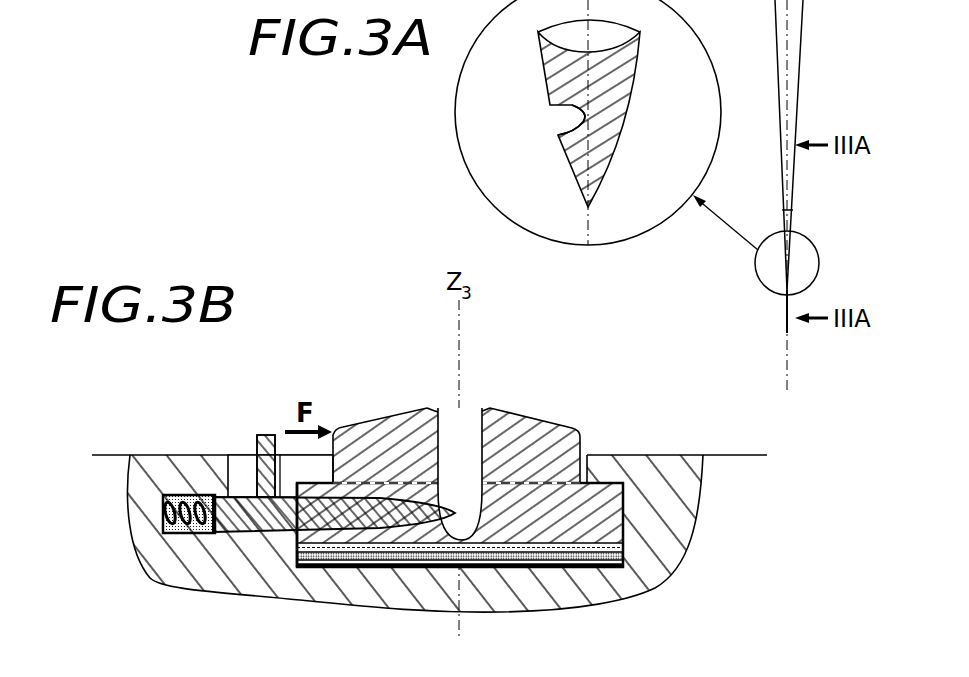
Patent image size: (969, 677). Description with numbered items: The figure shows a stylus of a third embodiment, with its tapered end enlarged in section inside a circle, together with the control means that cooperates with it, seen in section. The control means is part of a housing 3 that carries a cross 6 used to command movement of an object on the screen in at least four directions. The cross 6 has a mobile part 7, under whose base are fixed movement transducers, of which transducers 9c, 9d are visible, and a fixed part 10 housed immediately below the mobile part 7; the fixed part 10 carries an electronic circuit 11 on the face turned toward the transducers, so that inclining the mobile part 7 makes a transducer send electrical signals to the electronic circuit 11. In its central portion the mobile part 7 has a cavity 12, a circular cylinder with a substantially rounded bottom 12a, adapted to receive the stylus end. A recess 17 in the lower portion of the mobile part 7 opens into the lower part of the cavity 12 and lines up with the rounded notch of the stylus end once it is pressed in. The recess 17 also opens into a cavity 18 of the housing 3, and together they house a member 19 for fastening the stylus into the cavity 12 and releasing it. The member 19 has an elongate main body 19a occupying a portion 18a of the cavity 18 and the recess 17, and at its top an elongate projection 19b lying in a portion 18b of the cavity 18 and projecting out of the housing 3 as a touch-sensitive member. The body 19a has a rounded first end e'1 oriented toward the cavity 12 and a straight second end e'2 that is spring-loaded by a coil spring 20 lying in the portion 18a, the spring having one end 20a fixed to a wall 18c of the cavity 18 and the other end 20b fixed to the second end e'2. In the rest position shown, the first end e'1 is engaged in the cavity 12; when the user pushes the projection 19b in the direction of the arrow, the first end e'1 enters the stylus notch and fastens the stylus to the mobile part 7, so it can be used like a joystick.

The housing 3 is at (690, 470).
The cross 6 is at (546, 405).
The mobile part 7 is at (547, 428).
The movement transducer 9c is at (298, 560).
The movement transducer 9d is at (620, 545).
The fixed part 10 is at (627, 563).
The electronic circuit 11 is at (523, 570).
The cavity 12 is at (452, 425).
The bottom of the cavity 12a is at (620, 508).
The recess 17 is at (367, 496).
The cavity 18 is at (343, 533).
The portion of the cavity 18a is at (175, 535).
The portion of the cavity 18b is at (236, 466).
The wall of the cavity 18c is at (163, 535).
The member 19 is at (279, 424).
The elongate main body 19a is at (214, 533).
The elongate projection 19b is at (272, 433).
The coil spring 20 is at (187, 505).
The end of the spring 20a is at (162, 516).
The end of the spring 20b is at (212, 535).
The first end e'1 is at (442, 611).
The second end e'2 is at (196, 452).